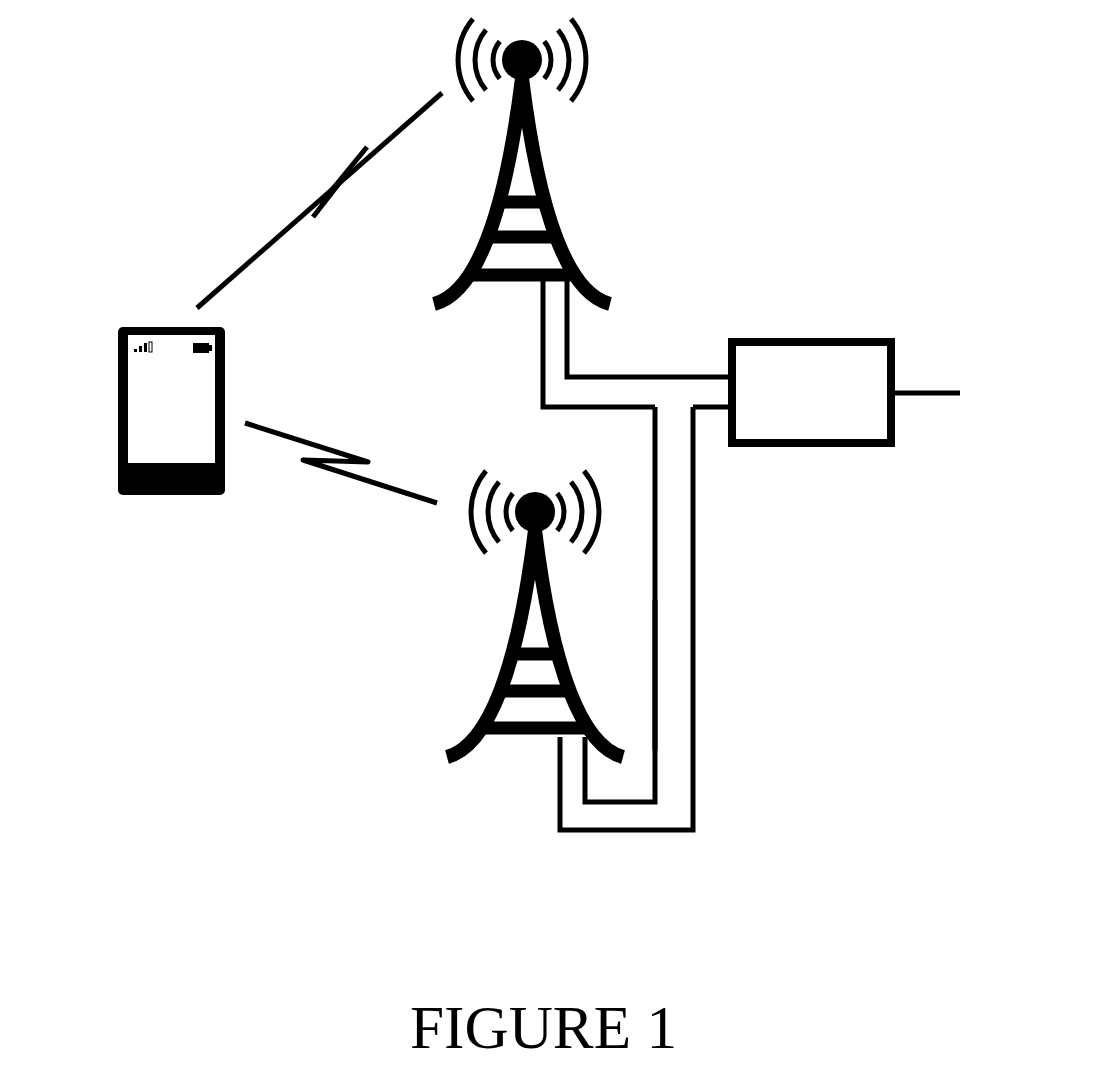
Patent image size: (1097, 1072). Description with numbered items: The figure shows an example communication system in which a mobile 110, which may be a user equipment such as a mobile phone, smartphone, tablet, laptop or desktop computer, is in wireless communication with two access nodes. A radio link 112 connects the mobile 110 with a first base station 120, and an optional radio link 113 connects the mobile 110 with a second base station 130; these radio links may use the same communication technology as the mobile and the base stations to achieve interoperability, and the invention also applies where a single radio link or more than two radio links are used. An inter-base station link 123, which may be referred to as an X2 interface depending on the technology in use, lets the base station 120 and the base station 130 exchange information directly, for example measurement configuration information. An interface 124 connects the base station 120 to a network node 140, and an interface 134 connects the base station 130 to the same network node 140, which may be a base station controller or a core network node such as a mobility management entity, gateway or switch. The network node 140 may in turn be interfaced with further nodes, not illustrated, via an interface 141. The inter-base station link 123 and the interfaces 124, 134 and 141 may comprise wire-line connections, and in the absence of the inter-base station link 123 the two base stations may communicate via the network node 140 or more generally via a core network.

The mobile 110 is at (122, 327).
The radio link 112 is at (353, 160).
The optional radio link 113 is at (318, 467).
The base station 120 is at (565, 197).
The inter-base station link 123 is at (655, 677).
The interface 124 is at (667, 377).
The base station 130 is at (503, 643).
The interface 134 is at (693, 592).
The network node 140 is at (837, 407).
The interface 141 is at (927, 390).